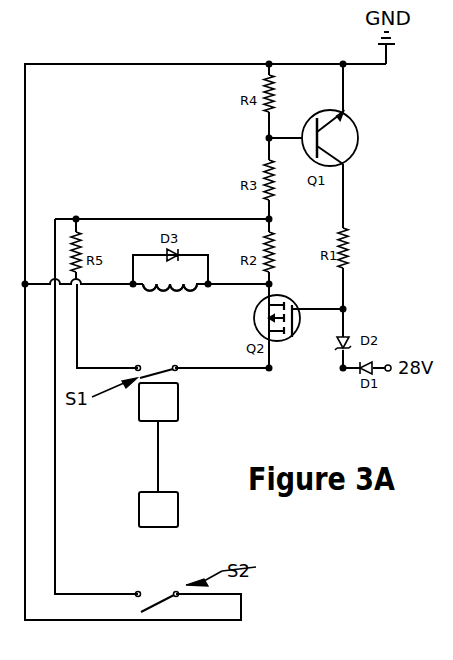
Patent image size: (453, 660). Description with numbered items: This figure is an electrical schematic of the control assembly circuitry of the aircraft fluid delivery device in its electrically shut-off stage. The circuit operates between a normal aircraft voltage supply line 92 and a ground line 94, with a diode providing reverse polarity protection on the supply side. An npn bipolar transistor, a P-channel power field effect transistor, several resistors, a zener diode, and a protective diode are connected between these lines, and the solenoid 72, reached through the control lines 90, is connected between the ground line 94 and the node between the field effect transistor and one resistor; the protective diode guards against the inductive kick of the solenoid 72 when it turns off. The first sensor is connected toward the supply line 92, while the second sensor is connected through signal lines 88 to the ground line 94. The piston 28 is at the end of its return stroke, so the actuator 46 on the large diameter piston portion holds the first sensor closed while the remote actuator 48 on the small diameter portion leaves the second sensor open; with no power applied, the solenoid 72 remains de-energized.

The ground line 94 is at (373, 63).
The control lines 90 is at (126, 286).
The solenoid 72 is at (193, 288).
The signal lines 88 is at (78, 353).
The 28V line 92 is at (356, 370).
The actuator 46 is at (158, 402).
The actuator 48 is at (158, 509).
The piston 28 is at (159, 460).